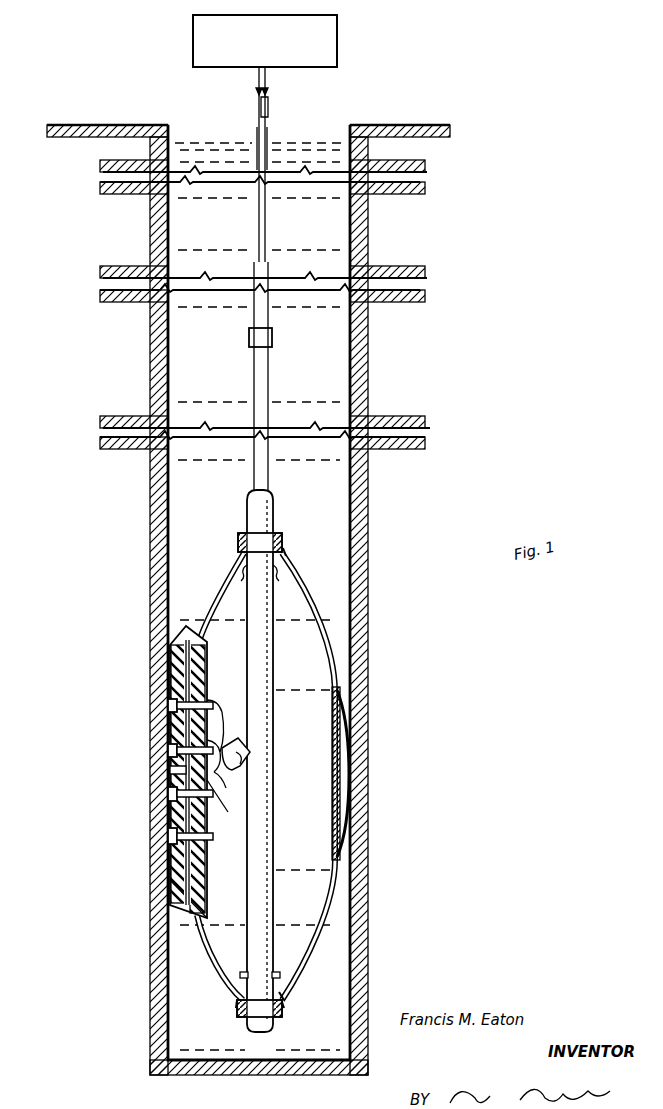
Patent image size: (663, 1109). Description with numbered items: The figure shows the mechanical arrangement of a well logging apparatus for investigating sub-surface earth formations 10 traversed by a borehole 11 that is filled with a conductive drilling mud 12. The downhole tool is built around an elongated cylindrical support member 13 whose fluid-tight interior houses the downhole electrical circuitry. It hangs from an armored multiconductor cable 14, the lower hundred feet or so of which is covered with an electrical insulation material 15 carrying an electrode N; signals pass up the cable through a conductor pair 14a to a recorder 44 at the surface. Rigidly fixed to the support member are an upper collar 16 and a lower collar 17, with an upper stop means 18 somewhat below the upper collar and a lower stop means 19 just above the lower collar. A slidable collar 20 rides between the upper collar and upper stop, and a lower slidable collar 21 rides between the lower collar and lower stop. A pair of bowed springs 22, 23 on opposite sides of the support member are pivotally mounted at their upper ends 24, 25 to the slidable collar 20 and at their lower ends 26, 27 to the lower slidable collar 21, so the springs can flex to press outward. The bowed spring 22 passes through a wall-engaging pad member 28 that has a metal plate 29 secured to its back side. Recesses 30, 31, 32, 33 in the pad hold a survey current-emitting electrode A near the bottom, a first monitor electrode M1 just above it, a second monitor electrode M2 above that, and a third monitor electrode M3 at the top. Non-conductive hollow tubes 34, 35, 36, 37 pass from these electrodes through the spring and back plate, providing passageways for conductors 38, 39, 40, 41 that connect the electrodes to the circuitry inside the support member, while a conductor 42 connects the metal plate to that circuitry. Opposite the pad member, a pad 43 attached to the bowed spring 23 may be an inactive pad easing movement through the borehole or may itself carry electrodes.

The sub-surface earth formations 10 is at (401, 585).
The borehole 11 is at (178, 481).
The drilling mud 12 is at (225, 493).
The support member 13 is at (283, 497).
The armored multiconductor cable 14 is at (266, 226).
The conductor pair 14a is at (270, 101).
The electrical insulation material 15 is at (268, 362).
The upper collar 16 is at (280, 542).
The lower collar 17 is at (285, 1013).
The upper stop means 18 is at (277, 582).
The lower stop means 19 is at (276, 975).
The slidable collar 20 is at (285, 544).
The lower slidable collar 21 is at (285, 1004).
The bowed spring 22 is at (222, 567).
The bowed spring 23 is at (302, 579).
The upper end of bowed spring 22 24 is at (242, 548).
The upper end of bowed spring 23 25 is at (290, 553).
The lower end of bowed spring 22 26 is at (237, 1000).
The lower end of bowed spring 23 27 is at (284, 996).
The pad member 28 is at (182, 628).
The metal plate 29 is at (206, 650).
The recess 30 is at (168, 845).
The recess 31 is at (168, 800).
The recess 32 is at (172, 752).
The recess 33 is at (172, 706).
The hollow tube 34 is at (218, 873).
The hollow tube 35 is at (207, 812).
The hollow tube 36 is at (172, 770).
The hollow tube 37 is at (210, 698).
The conductor 38 is at (228, 800).
The conductor 39 is at (218, 790).
The conductor 40 is at (224, 748).
The conductor 41 is at (214, 712).
The conductor 42 is at (245, 762).
The pad 43 is at (343, 736).
The recorder 44 is at (337, 18).
The first monitor electrode M1 is at (168, 792).
The second monitor electrode M2 is at (170, 748).
The third monitor electrode M3 is at (168, 703).
The survey current-emitting electrode A is at (168, 836).